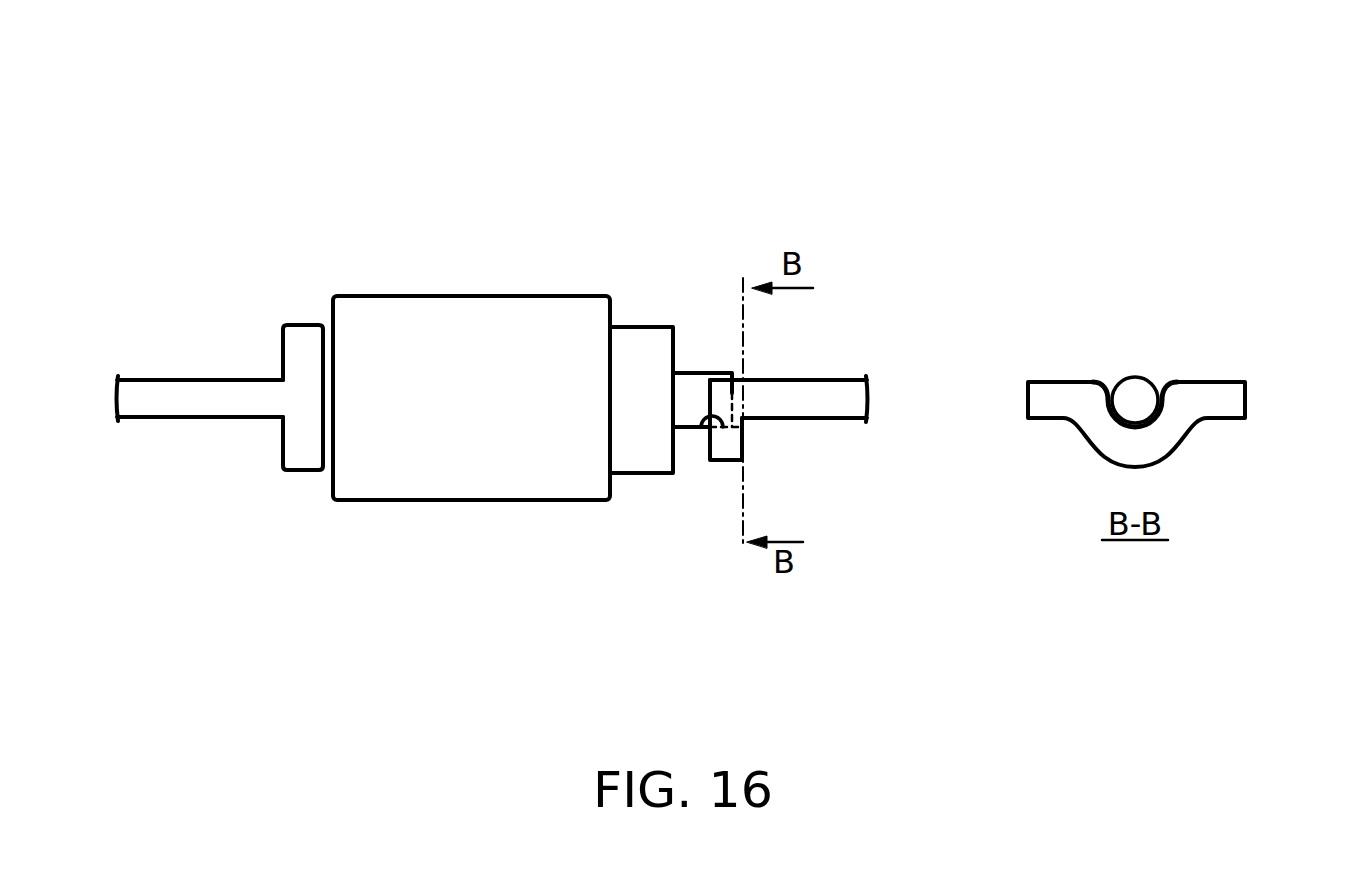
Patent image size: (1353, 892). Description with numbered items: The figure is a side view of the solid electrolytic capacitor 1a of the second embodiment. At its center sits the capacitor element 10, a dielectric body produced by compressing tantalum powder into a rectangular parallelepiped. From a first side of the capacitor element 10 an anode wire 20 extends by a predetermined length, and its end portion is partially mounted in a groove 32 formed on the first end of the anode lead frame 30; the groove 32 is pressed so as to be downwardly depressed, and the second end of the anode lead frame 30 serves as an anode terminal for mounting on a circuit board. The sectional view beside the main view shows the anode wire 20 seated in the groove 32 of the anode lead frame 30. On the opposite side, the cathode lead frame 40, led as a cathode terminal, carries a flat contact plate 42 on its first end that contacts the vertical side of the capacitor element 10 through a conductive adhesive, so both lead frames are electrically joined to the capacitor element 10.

The solid electrolytic capacitor 1a is at (1212, 222).
The capacitor element 10 is at (505, 462).
The anode wire 20 is at (698, 387).
The anode lead frame 30 is at (847, 388).
The groove 32 is at (702, 430).
The cathode lead frame 40 is at (163, 405).
The flat contact plate 42 is at (297, 457).